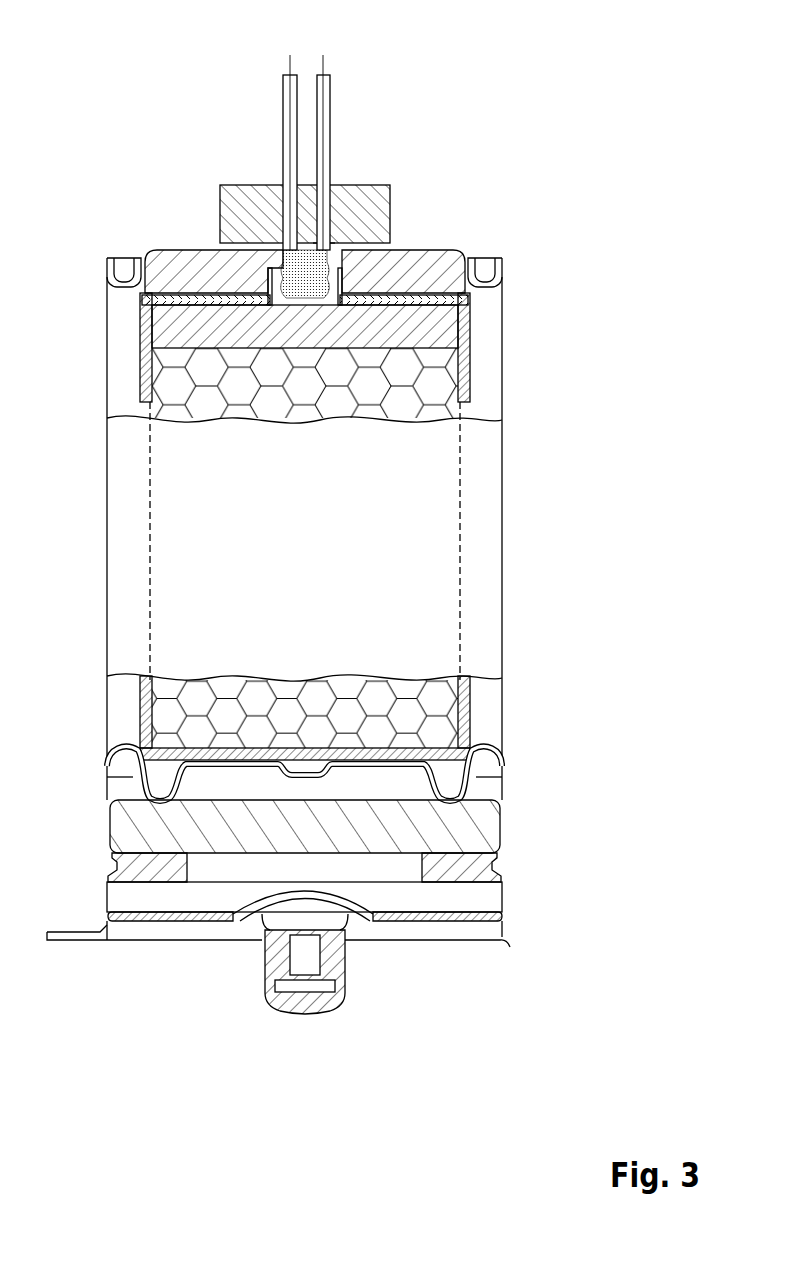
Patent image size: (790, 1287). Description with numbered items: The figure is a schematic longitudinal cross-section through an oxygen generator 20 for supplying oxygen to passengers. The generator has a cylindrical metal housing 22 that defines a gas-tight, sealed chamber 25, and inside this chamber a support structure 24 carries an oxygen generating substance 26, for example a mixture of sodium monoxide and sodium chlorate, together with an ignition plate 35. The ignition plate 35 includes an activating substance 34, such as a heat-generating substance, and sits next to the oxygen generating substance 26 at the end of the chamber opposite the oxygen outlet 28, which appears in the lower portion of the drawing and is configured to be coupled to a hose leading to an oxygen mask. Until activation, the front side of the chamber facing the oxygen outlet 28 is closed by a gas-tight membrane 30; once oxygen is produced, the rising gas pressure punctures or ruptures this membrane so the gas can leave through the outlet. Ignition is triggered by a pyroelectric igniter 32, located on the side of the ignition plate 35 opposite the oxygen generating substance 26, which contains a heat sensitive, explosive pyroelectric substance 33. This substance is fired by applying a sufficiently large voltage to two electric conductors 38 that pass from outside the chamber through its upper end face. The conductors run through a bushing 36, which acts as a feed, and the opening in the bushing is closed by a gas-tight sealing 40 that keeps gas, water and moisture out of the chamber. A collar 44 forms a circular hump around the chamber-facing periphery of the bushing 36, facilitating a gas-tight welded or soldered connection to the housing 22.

The oxygen generator 20 is at (512, 90).
The cylindrical metal housing 22 is at (520, 273).
The support structure 24 is at (482, 322).
The gas-tight chamber 25 is at (272, 558).
The oxygen generating substance 26 is at (420, 387).
The oxygen outlet 28 is at (243, 1003).
The gas-tight membrane 30 is at (265, 930).
The pyroelectric igniter 32 is at (265, 250).
The pyroelectric substance 33 is at (313, 293).
The activating substance 34 is at (197, 333).
The ignition plate 35 is at (209, 352).
The bushing 36 is at (410, 147).
The electric conductors 38 is at (352, 66).
The gas-tight sealing 40 is at (338, 196).
The collar 44 is at (390, 242).